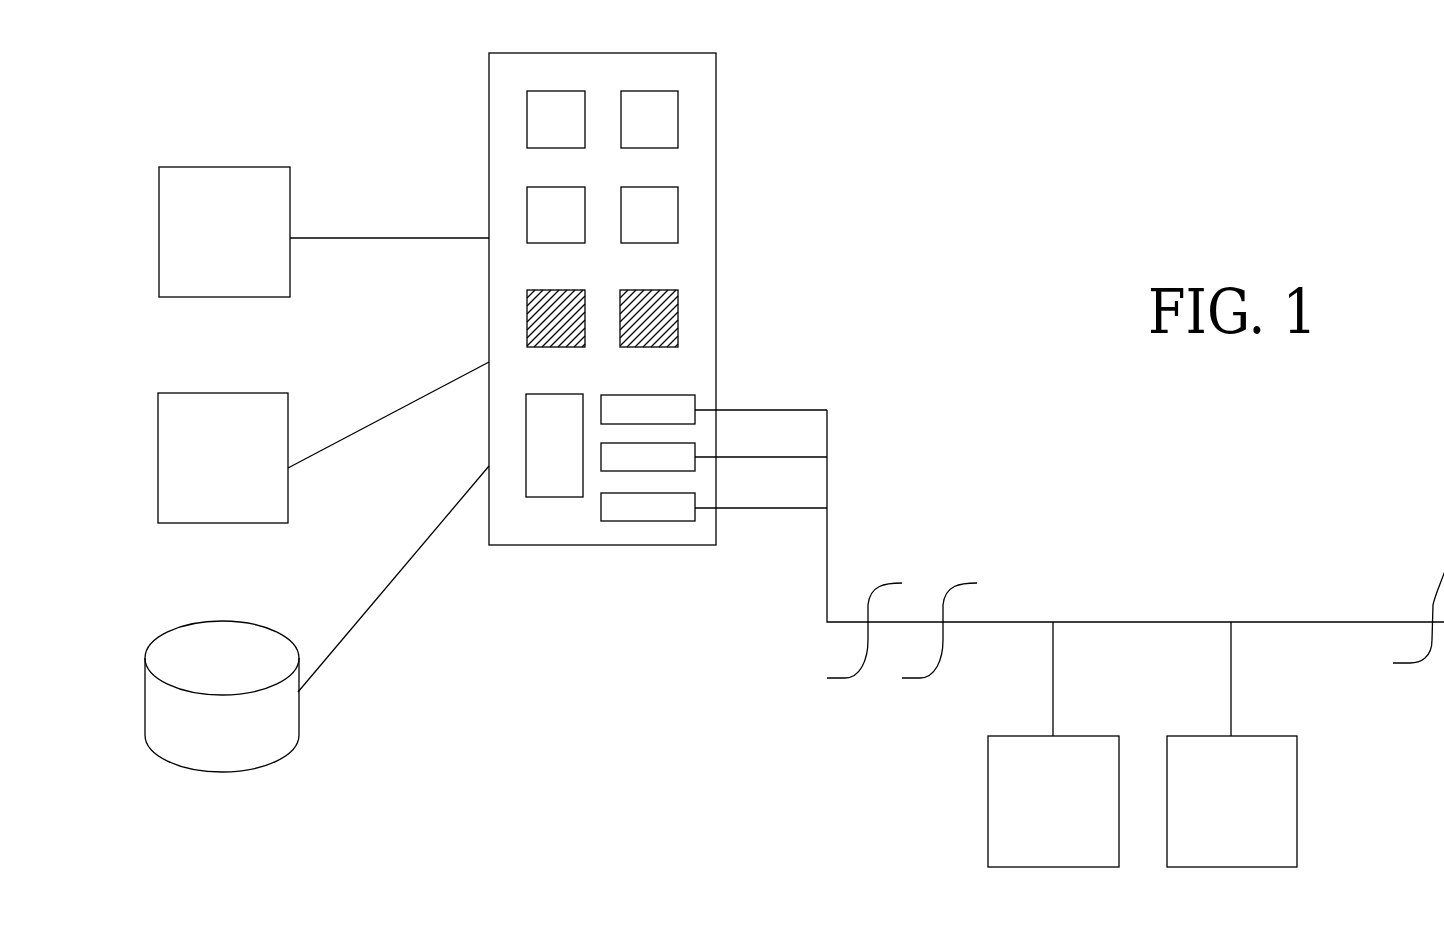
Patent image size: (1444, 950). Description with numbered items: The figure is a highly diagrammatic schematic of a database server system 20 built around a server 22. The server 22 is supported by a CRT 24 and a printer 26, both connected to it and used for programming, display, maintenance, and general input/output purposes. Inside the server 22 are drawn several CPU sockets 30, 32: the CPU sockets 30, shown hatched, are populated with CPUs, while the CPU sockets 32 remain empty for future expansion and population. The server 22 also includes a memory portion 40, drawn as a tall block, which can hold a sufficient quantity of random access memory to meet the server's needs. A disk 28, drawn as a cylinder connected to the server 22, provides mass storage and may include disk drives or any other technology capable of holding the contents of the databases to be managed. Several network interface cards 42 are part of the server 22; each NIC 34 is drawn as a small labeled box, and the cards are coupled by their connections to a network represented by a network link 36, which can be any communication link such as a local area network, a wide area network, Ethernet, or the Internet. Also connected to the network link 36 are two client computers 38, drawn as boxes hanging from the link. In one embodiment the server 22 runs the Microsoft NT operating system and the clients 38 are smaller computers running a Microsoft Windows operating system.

The database server system 20 is at (914, 102).
The server 22 is at (716, 118).
The CRT 24 is at (255, 165).
The printer 26 is at (260, 393).
The disk 28 is at (298, 718).
The CPU sockets 30 is at (585, 347).
The CPU sockets 32 is at (565, 243).
The network interface cards (NIC) 34 is at (602, 468).
The network link 36 is at (827, 535).
The client computers 38 is at (988, 778).
The memory portion 40 is at (526, 421).
The Network Interface Cards 42 is at (695, 465).